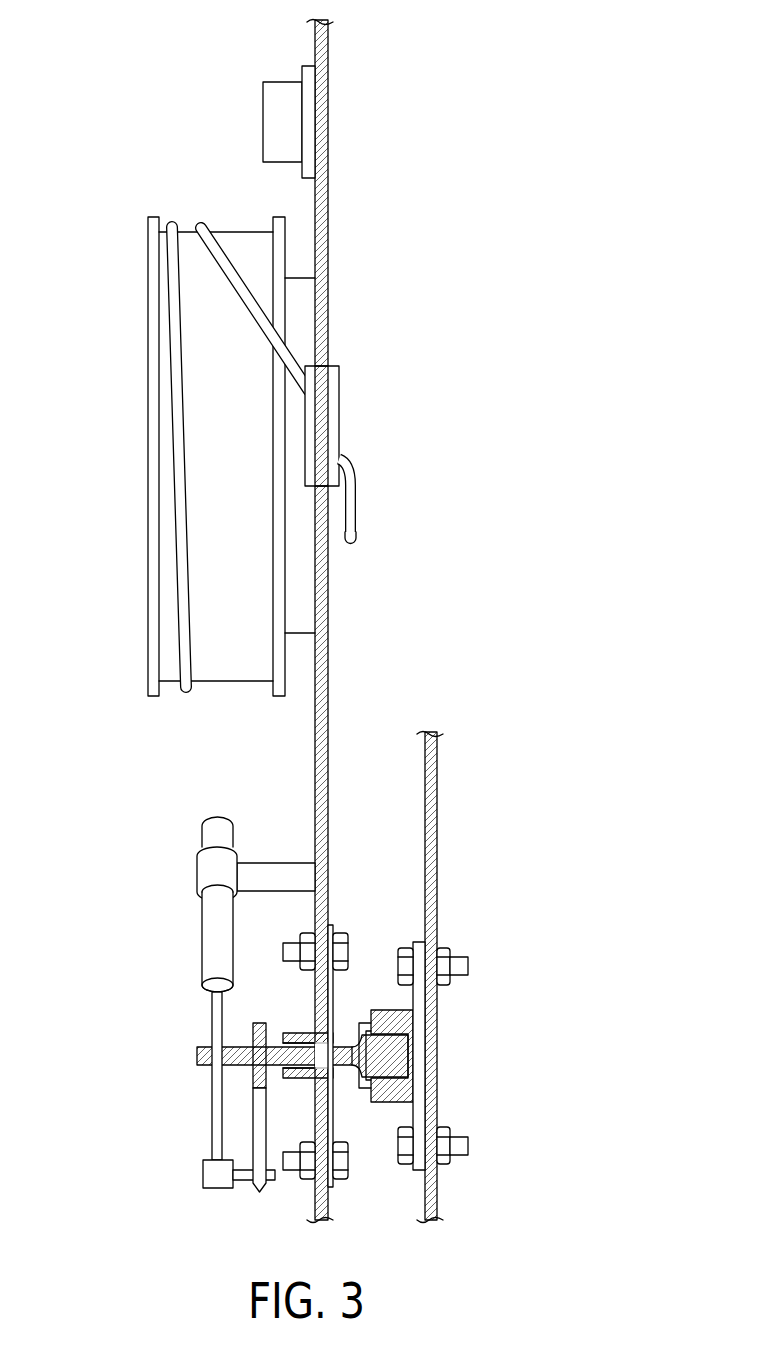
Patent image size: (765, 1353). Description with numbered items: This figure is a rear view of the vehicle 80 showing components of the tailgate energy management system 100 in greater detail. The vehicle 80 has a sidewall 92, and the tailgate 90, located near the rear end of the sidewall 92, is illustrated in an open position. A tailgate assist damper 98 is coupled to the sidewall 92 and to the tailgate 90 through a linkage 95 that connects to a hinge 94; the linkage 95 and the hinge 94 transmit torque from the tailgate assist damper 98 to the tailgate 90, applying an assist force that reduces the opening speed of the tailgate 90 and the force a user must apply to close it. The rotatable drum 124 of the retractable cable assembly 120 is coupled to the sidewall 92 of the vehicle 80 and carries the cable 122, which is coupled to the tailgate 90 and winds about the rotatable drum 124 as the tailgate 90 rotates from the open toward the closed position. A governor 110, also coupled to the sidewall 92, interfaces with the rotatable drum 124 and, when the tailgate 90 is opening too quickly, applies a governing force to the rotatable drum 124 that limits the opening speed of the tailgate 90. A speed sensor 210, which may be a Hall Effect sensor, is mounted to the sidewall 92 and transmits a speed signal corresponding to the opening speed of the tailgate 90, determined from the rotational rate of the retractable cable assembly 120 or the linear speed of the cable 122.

The vehicle 80 is at (531, 149).
The tailgate 90 is at (437, 817).
The sidewall 92 is at (334, 50).
The hinge 94 is at (410, 1108).
The linkage 95 is at (258, 1190).
The tailgate assist damper 98 is at (200, 912).
The tailgate energy management system 100 is at (126, 193).
The governor 110 is at (312, 636).
The retractable cable assembly 120 is at (169, 486).
The cable 122 is at (357, 516).
The rotatable drum 124 is at (150, 697).
The speed sensor 210 is at (263, 100).